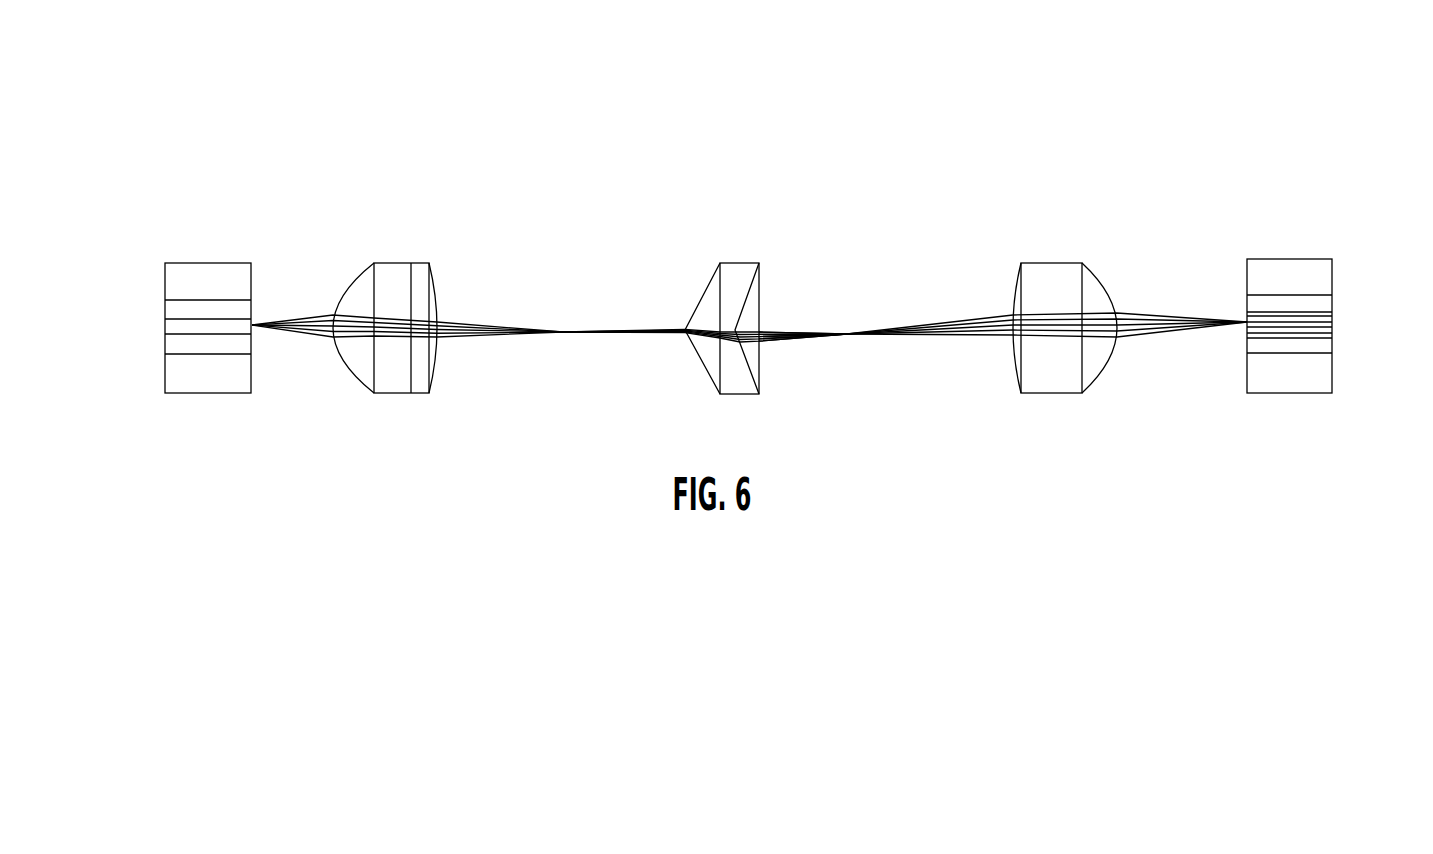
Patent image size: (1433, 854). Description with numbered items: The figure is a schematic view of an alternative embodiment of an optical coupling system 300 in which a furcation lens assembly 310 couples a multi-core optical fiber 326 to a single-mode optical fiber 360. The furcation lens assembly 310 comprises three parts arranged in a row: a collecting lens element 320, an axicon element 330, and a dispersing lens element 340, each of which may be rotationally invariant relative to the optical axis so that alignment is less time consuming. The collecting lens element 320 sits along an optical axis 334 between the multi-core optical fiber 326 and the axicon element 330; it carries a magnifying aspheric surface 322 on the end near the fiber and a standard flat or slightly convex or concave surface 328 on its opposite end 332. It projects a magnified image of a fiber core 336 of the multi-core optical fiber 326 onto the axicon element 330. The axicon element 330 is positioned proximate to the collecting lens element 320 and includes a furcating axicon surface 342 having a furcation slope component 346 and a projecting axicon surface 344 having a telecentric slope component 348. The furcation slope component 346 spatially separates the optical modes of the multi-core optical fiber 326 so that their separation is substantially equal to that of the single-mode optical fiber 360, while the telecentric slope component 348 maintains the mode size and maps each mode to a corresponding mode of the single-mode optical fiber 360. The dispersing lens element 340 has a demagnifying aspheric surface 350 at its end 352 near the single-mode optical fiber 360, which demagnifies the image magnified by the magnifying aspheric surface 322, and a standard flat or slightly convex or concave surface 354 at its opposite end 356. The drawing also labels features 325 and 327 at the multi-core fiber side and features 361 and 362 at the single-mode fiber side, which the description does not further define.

The optical coupling system 300 is at (900, 136).
The furcation lens assembly 310 is at (603, 153).
The collecting lens element 320 is at (333, 264).
The magnifying aspheric surface 322 is at (366, 385).
The light source 325 is at (208, 394).
The multi-core optical fiber 326 is at (177, 328).
The source layer 327 is at (182, 302).
The standard flat or slightly convex or concave surface 328 is at (436, 365).
The axicon element 330 is at (725, 193).
The opposite end 332 is at (456, 258).
The optical axis 334 is at (823, 332).
The fiber core 336 is at (266, 358).
The dispersing lens element 340 is at (1063, 233).
The furcating axicon surface 342 is at (697, 318).
The projecting axicon surface 344 is at (755, 300).
The furcation slope component 346 is at (700, 300).
The telecentric slope component 348 is at (743, 290).
The demagnifying aspheric surface 350 is at (1110, 355).
The end 352 is at (1118, 258).
The standard flat or slightly convex or concave surface 354 is at (1013, 362).
The opposite end 356 is at (996, 291).
The single-mode optical fiber 360 is at (1322, 321).
The detector 361 is at (1285, 394).
The detector layer 362 is at (1317, 295).